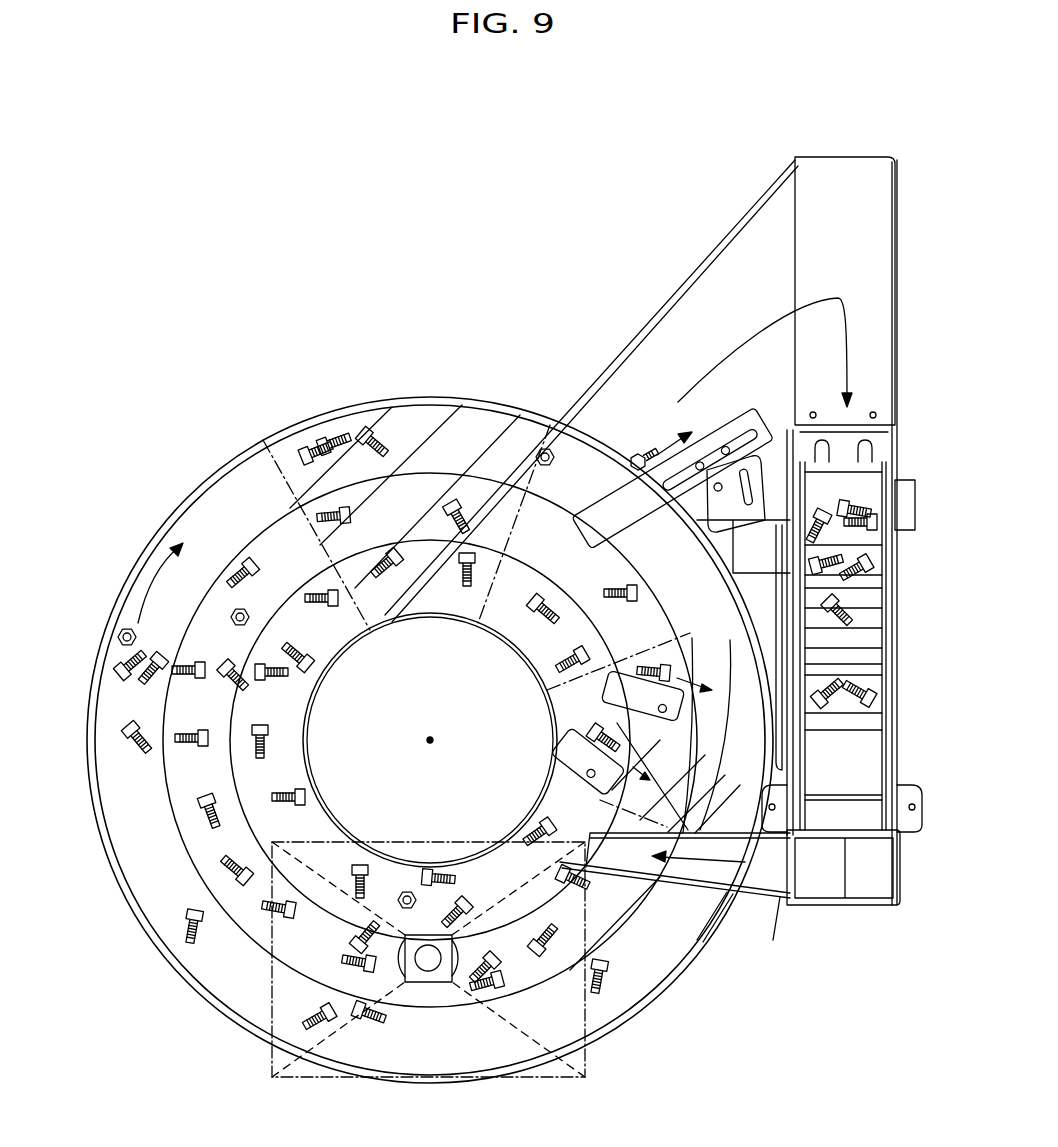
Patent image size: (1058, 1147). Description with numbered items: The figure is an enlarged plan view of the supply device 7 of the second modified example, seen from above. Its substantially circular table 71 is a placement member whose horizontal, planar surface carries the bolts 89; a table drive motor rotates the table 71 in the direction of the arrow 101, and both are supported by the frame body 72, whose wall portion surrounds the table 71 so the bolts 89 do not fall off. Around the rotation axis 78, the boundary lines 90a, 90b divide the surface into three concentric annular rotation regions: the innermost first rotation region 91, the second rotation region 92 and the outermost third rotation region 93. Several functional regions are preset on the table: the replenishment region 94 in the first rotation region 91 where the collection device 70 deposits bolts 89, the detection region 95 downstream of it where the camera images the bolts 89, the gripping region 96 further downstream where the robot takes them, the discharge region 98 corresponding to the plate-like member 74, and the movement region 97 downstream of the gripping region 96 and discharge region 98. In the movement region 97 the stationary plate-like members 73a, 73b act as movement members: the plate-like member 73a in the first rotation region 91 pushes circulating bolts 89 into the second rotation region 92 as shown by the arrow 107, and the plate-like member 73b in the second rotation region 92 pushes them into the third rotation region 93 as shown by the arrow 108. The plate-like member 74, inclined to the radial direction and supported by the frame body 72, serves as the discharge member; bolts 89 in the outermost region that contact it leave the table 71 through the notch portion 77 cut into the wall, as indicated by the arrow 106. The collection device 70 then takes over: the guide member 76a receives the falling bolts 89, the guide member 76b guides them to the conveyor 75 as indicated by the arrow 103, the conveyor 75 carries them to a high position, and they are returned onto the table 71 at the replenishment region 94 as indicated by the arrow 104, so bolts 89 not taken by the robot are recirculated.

The supply device 7 is at (624, 146).
The collection device 70 is at (897, 353).
The table 71 is at (208, 977).
The frame body 72 is at (157, 960).
The plate-like member 73a is at (750, 765).
The plate-like member 73b is at (700, 663).
The plate-like member 74 is at (593, 480).
The conveyor 75 is at (868, 613).
The guide member 76a is at (762, 243).
The guide member 76b is at (872, 188).
The notch portion 77 is at (553, 427).
The rotation axis 78 is at (430, 740).
The bolt 89 is at (232, 557).
The boundary line 90a is at (108, 769).
The boundary line 90b is at (248, 800).
The first rotation region 91 is at (193, 833).
The second rotation region 92 is at (190, 865).
The third rotation region 93 is at (158, 918).
The replenishment region 94 is at (575, 905).
The detection region 95 is at (267, 993).
The gripping region 96 is at (425, 420).
The movement region 97 is at (783, 752).
The discharge region 98 is at (612, 470).
The arrow 101 is at (157, 577).
The arrow 103 is at (853, 313).
The arrow 104 is at (740, 867).
The arrow 106 is at (668, 448).
The arrow 107 is at (785, 835).
The arrow 108 is at (690, 690).